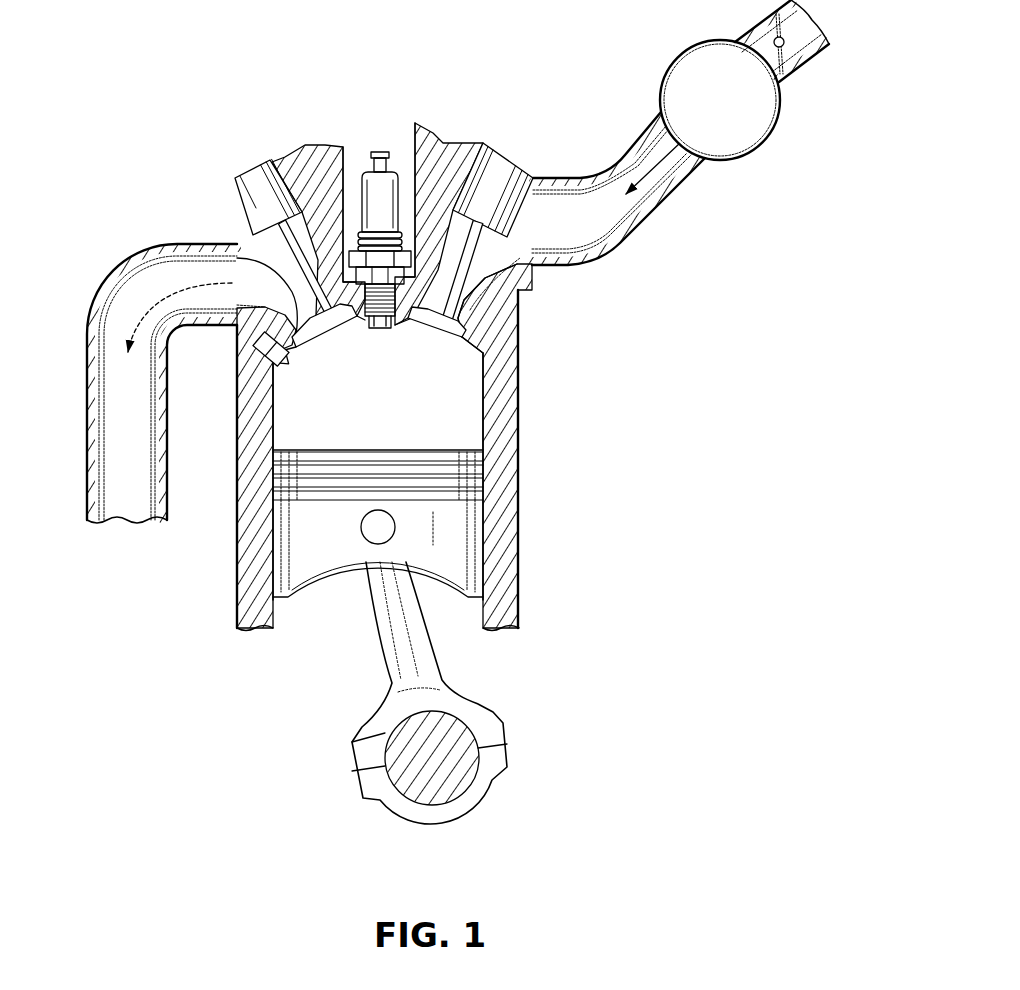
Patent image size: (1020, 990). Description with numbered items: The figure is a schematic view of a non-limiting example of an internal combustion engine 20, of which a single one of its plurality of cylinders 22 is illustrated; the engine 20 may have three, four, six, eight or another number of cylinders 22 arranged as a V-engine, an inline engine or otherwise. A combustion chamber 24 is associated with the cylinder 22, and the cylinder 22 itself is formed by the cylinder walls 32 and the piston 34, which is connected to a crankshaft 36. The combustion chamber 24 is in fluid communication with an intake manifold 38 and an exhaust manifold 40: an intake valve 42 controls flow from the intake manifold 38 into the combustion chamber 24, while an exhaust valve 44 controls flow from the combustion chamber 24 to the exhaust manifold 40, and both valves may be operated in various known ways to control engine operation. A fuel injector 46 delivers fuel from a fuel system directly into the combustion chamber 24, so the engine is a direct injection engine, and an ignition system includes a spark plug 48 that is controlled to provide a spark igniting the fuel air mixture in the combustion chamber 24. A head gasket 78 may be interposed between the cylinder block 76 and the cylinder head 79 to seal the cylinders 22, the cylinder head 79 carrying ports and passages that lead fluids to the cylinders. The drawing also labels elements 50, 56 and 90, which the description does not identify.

The internal combustion engine 20 is at (158, 137).
The cylinder 22 is at (359, 384).
The combustion chamber 24 is at (421, 384).
The cylinder walls 32 is at (520, 475).
The piston 34 is at (420, 533).
The crankshaft 36 is at (383, 738).
The intake manifold 38 is at (576, 113).
The exhaust manifold 40 is at (124, 242).
The intake valve 42 is at (505, 262).
The exhaust valve 44 is at (240, 228).
The fuel injector 46 is at (258, 350).
The spark plug 48 is at (372, 152).
The turbine 50 is at (760, 150).
The exhaust passage 56 is at (658, 222).
The cylinder block 76 is at (520, 535).
The head gasket 78 is at (243, 378).
The cylinder head 79 is at (520, 336).
The wastegate valve 90 is at (803, 63).